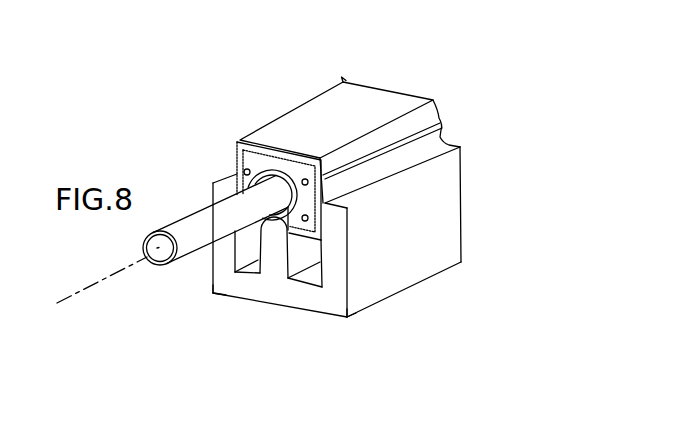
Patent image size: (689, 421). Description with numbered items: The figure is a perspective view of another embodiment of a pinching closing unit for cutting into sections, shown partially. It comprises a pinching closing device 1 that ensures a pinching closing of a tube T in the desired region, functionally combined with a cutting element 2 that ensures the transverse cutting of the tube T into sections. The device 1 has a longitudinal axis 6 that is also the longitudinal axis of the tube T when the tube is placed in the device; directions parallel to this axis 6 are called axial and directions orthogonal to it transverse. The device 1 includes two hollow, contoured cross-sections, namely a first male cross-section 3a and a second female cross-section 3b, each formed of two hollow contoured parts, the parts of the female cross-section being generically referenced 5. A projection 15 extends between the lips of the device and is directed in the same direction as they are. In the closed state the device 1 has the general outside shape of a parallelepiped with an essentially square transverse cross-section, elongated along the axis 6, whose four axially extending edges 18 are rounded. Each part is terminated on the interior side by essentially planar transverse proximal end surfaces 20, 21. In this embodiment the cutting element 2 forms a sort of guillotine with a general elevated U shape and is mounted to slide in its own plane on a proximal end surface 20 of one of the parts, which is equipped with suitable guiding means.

The pinching closing device 1 is at (468, 187).
The cutting element 2 is at (255, 163).
The first male cross-section 3a is at (318, 88).
The second female cross-section 3b is at (407, 256).
The parts of the female cross-section 5 is at (448, 242).
The longitudinal axis 6 is at (108, 277).
The projection 15 is at (273, 241).
The edges 18 is at (213, 293).
The proximal end surface 20 is at (296, 296).
The proximal end surface 21 is at (296, 296).
The tube T is at (180, 232).